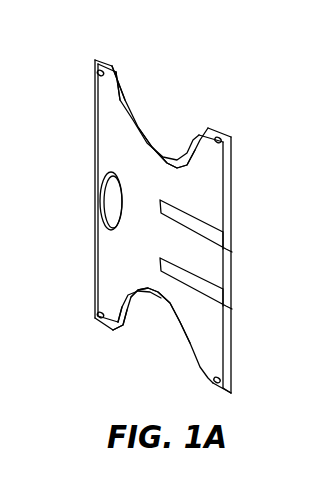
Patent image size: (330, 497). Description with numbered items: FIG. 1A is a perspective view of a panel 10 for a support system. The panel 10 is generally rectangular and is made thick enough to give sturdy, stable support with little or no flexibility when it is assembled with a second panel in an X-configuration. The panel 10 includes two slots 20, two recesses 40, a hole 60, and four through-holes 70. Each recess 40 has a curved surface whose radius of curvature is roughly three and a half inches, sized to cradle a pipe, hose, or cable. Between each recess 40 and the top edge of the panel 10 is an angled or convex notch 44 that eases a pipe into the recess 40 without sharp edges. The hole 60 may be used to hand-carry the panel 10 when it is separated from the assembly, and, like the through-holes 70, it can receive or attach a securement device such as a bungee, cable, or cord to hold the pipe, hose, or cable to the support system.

The panel 10 is at (218, 114).
The slot 20 is at (226, 232).
The recess 40 is at (164, 156).
The notch 44 is at (124, 86).
The hole 60 is at (108, 195).
The through-hole 70 is at (96, 74).